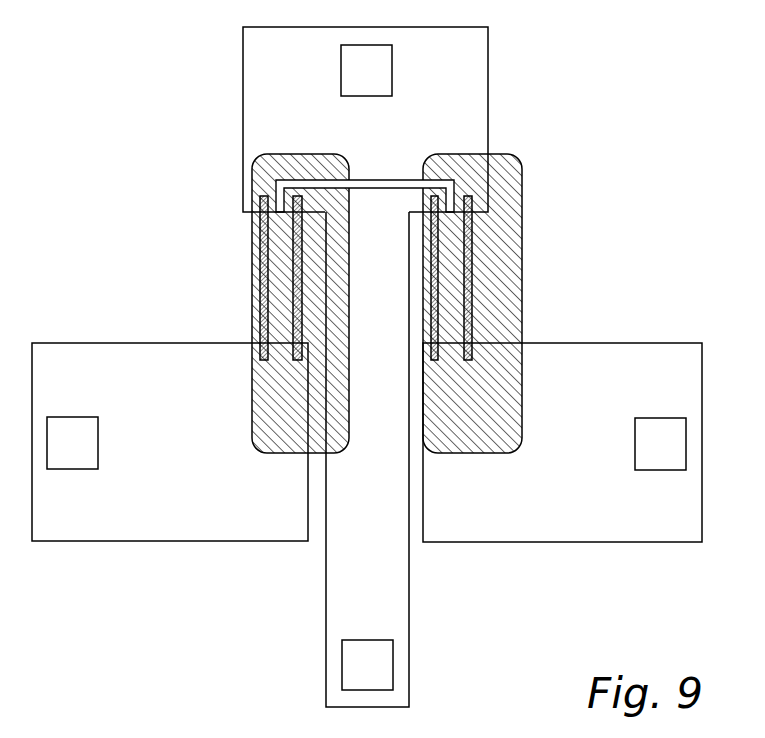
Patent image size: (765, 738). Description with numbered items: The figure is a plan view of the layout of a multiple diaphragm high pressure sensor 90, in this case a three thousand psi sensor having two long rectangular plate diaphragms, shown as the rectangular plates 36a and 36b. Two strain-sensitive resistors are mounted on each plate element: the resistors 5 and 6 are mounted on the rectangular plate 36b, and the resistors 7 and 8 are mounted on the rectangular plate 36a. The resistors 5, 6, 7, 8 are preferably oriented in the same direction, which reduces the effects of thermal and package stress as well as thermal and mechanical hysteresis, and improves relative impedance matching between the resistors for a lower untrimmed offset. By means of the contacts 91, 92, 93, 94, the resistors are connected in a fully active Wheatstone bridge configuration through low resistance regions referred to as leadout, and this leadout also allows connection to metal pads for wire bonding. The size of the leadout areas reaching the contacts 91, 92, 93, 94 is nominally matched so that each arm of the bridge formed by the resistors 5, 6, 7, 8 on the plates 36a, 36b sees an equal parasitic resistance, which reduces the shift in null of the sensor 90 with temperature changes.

The pressure sensor resistor layout 90 is at (568, 96).
The contact 91 is at (620, 452).
The contact 92 is at (148, 452).
The contact 93 is at (384, 618).
The contact 94 is at (285, 78).
The long rectangular plate 36a is at (522, 226).
The long rectangular plate 36b is at (252, 226).
The strain-sensitive resistor 5 is at (252, 257).
The strain-sensitive resistor 6 is at (290, 362).
The strain-sensitive resistor 7 is at (442, 362).
The strain-sensitive resistor 8 is at (474, 256).